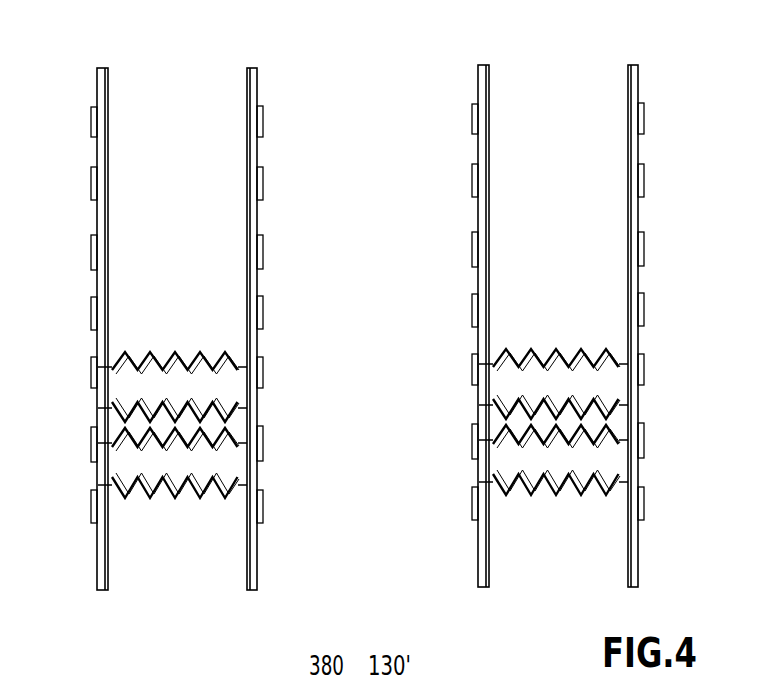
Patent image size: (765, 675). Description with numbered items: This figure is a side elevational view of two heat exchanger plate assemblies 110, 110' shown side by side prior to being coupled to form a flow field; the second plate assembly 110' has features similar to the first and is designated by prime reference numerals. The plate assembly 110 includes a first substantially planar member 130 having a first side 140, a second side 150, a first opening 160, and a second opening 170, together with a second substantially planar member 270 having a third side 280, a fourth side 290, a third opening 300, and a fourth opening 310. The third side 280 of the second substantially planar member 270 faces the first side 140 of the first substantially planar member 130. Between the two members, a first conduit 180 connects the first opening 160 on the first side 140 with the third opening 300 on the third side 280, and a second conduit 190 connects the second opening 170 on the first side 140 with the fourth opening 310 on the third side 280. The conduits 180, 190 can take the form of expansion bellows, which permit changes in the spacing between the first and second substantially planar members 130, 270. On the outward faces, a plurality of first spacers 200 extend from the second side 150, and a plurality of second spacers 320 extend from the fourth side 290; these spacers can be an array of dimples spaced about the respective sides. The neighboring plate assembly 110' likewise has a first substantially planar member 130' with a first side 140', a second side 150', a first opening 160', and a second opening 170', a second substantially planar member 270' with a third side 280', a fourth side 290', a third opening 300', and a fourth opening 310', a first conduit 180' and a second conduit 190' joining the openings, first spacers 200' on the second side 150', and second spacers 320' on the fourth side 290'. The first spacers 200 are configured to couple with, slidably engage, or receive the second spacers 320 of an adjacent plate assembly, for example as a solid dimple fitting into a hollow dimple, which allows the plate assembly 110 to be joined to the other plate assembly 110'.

The plate assembly 110 is at (182, 299).
The first substantially planar member 130 is at (70, 319).
The first side 140 is at (130, 308).
The second side 150 is at (65, 153).
The first opening 160 is at (65, 384).
The second opening 170 is at (66, 475).
The first conduit 180 is at (172, 358).
The second conduit 190 is at (172, 500).
The first spacer 200 is at (62, 282).
The second substantially planar member 270 is at (278, 319).
The third side 280 is at (215, 329).
The fourth side 290 is at (283, 153).
The third opening 300 is at (293, 384).
The fourth opening 310 is at (293, 474).
The second spacer 320 is at (293, 282).
The plate assembly 110' is at (566, 296).
The first substantially planar member 130' is at (450, 316).
The first side 140' is at (514, 305).
The second side 150' is at (445, 150).
The first opening 160' is at (445, 381).
The second opening 170' is at (446, 472).
The first conduit 180' is at (553, 355).
The second conduit 190' is at (553, 497).
The first spacer 200' is at (442, 279).
The second substantially planar member 270' is at (663, 316).
The third side 280' is at (595, 326).
The fourth side 290' is at (668, 150).
The third opening 300' is at (678, 381).
The fourth opening 310' is at (678, 471).
The second spacer 320' is at (678, 279).